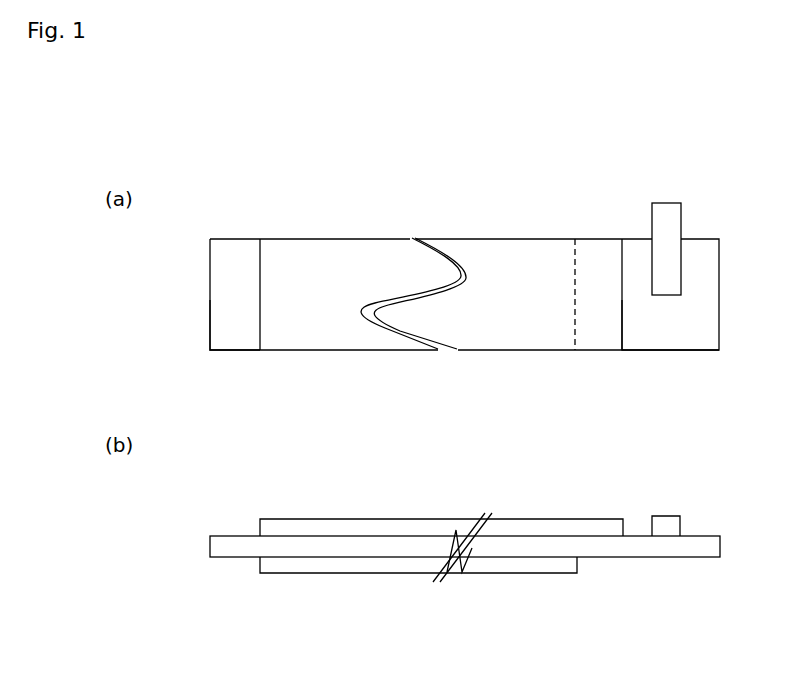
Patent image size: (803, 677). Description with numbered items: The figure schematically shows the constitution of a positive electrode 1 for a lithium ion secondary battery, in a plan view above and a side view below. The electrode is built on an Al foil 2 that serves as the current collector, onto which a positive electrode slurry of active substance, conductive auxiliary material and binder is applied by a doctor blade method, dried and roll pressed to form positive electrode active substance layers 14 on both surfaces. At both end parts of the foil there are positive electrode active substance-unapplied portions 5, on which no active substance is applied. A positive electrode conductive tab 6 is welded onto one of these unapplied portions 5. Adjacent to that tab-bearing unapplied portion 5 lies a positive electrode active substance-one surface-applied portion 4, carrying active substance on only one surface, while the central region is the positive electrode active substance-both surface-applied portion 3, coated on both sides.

The positive electrode 1 is at (193, 298).
The Al foil 2 is at (655, 548).
The positive electrode active substance-both surface-applied portion 3 is at (313, 258).
The positive electrode active substance-one surface-applied portion 4 is at (600, 258).
The positive electrode active substance-unapplied portion 5 is at (240, 338).
The positive electrode conductive tab 6 is at (665, 207).
The positive electrode active substance layer 14 is at (533, 521).